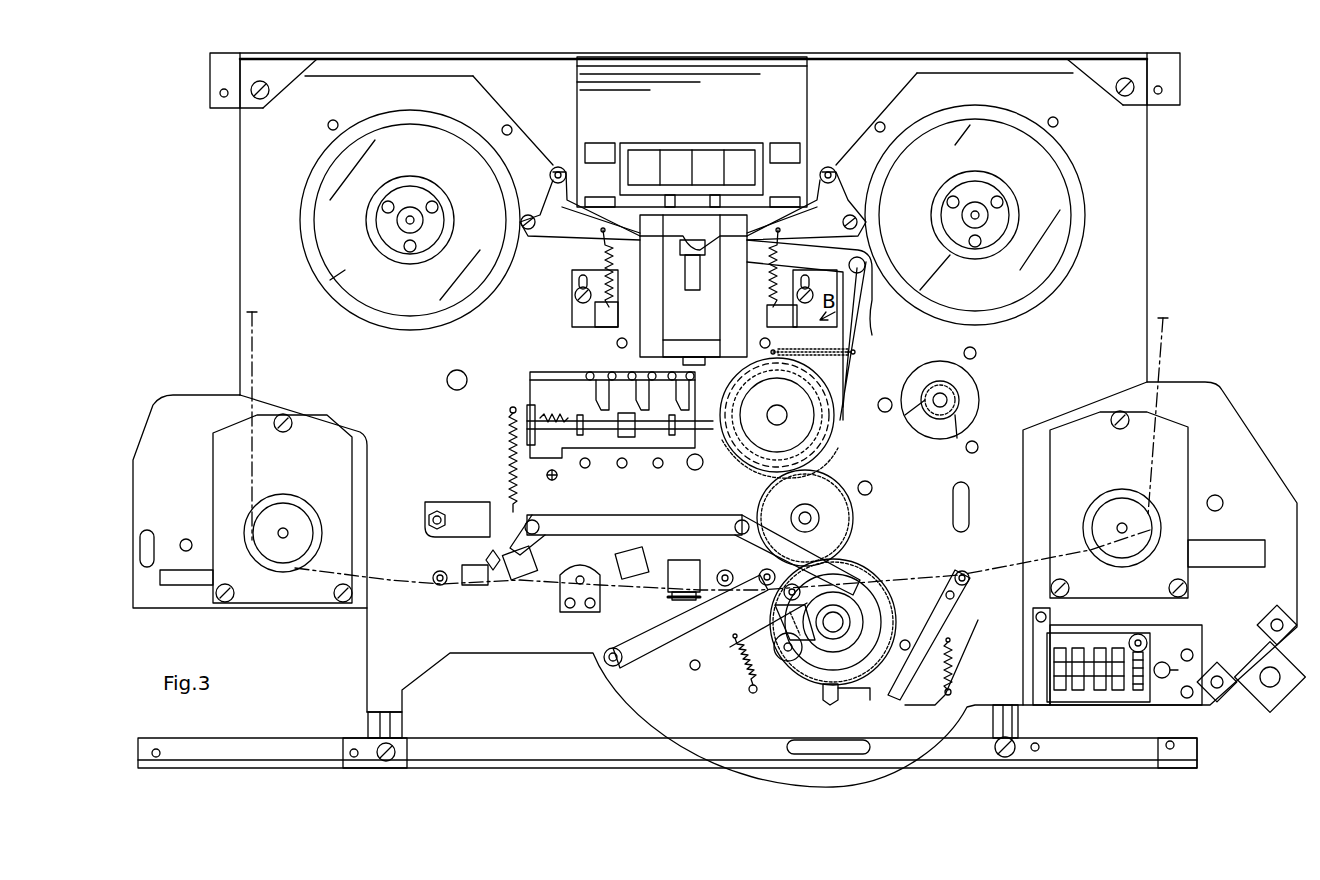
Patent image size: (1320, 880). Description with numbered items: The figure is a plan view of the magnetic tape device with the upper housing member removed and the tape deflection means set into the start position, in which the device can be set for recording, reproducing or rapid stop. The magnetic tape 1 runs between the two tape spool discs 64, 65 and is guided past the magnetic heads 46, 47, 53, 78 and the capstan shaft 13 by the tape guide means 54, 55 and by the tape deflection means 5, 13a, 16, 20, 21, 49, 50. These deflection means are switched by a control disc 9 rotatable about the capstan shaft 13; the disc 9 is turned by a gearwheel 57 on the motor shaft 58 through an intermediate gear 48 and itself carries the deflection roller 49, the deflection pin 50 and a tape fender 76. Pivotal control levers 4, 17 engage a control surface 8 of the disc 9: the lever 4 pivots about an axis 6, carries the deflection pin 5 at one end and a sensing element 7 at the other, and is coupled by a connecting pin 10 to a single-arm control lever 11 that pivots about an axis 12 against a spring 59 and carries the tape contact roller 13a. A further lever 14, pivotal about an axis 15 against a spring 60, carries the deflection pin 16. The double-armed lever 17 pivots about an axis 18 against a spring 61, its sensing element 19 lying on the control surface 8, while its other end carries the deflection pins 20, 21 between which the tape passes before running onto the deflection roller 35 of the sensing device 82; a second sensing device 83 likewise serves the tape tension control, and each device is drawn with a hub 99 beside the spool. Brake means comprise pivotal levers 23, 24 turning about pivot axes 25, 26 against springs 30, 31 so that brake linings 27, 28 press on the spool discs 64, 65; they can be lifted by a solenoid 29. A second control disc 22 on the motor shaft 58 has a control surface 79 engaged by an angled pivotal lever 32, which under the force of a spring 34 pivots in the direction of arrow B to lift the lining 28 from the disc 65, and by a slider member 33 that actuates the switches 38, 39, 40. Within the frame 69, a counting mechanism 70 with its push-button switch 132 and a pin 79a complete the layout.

The magnetic tape 1 is at (252, 362).
The control lever 4 is at (632, 515).
The deflection pin 5 is at (485, 560).
The axis 6 is at (742, 518).
The sensing element 7 is at (852, 572).
The control surface 8 is at (885, 600).
The control disc 9 is at (878, 580).
The connecting pin 10 is at (548, 525).
The control lever 11 is at (540, 480).
The axis 12 is at (425, 520).
The capstan shaft 13 is at (830, 632).
The tape contact roller 13a is at (565, 597).
The lever 14 is at (662, 652).
The axis 15 is at (604, 665).
The deflection pin 16 is at (762, 572).
The control lever 17 is at (893, 690).
The axis 18 is at (910, 652).
The sensing element 19 is at (833, 698).
The deflection pin 20 is at (968, 572).
The deflection pin 21 is at (955, 600).
The control disc 22 is at (832, 428).
The pivotal lever 23 is at (565, 232).
The pivotal lever 24 is at (845, 200).
The pivot axis 25 is at (557, 168).
The pivot axis 26 is at (832, 168).
The brake lining 27 is at (530, 213).
The brake lining 28 is at (858, 222).
The solenoid 29 is at (692, 320).
The spring 30 is at (612, 290).
The spring 31 is at (765, 302).
The pivotal lever 32 is at (860, 312).
The slider member 33 is at (702, 470).
The spring 34 is at (856, 352).
The deflection roller 35 is at (1098, 518).
The switch 38 is at (575, 372).
The switch 39 is at (625, 372).
The switch 40 is at (768, 395).
The magnetic head 46 is at (518, 578).
The magnetic head 47 is at (635, 578).
The intermediate gear 48 is at (843, 505).
The deflection roller 49 is at (812, 680).
The deflection pin 50 is at (785, 600).
The magnetic head 53 is at (682, 570).
The tape guide means 54 is at (433, 575).
The tape guide means 55 is at (718, 577).
The gearwheel 57 is at (815, 465).
The motor shaft 58 is at (793, 402).
The spring 59 is at (508, 428).
The spring 60 is at (755, 692).
The spring 61 is at (958, 665).
The tape spool disc 64 is at (350, 318).
The tape spool disc 65 is at (1052, 290).
The frame 69 is at (1148, 222).
The counting mechanism 70 is at (1092, 640).
The tape fender 76 is at (786, 661).
The magnetic head 78 is at (470, 585).
The control surface 79 is at (850, 392).
The pin 79a is at (698, 672).
The sensing device 82 is at (1134, 463).
The sensing device 83 is at (294, 473).
The reel hub 99 is at (305, 520).
The push-button switch 132 is at (1166, 660).